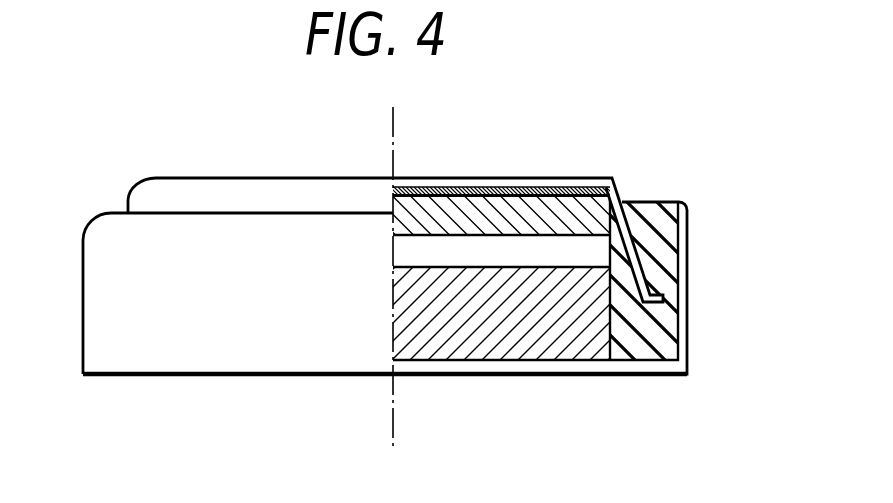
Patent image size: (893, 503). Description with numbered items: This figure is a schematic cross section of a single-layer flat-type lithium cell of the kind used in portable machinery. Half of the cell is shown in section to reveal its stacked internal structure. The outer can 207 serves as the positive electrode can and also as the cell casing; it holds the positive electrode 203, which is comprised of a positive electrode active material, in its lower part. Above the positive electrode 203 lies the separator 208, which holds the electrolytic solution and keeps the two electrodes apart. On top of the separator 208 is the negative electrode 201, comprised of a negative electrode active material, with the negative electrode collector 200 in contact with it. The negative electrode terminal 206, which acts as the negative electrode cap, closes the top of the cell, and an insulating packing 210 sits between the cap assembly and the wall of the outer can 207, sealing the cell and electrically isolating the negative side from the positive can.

The negative electrode collector 200 is at (503, 187).
The negative electrode 201 is at (565, 208).
The positive electrode 203 is at (519, 345).
The negative electrode terminal 206 is at (435, 178).
The outer can 207 is at (587, 372).
The separator 208 is at (437, 255).
The insulating packing 210 is at (650, 212).